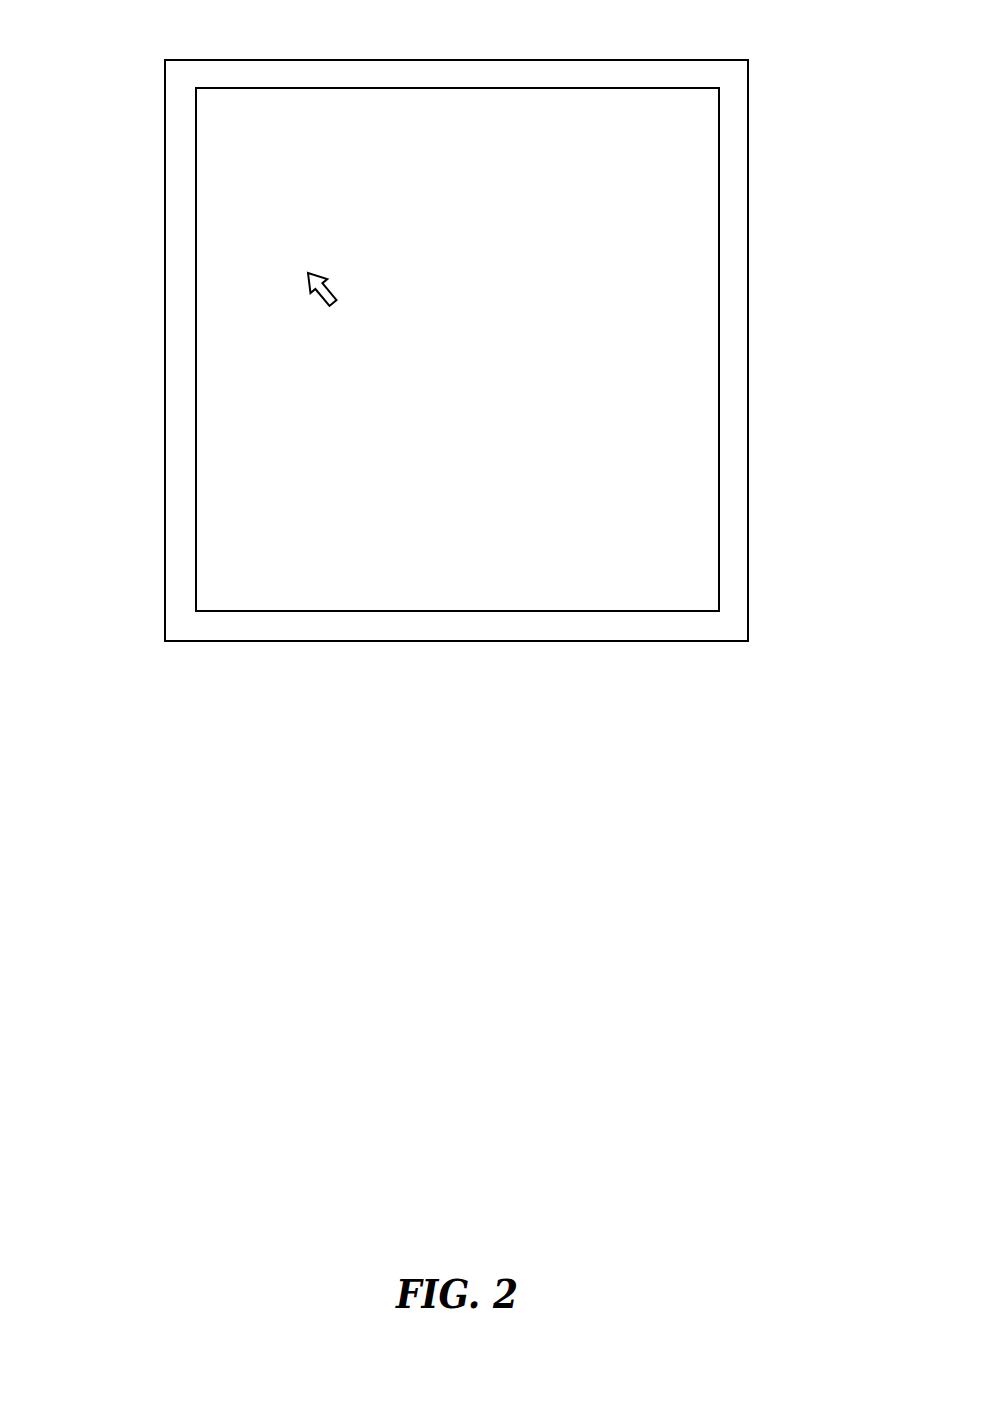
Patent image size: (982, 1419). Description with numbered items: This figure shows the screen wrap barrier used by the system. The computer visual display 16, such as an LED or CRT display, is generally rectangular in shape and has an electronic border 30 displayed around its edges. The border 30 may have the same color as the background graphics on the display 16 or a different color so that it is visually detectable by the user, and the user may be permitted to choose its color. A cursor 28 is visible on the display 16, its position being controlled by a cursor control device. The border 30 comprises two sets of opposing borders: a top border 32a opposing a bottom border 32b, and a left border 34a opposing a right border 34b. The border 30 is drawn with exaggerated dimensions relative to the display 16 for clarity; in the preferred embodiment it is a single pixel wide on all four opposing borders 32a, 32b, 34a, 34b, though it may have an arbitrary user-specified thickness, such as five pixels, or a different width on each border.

The computer visual display 16 is at (150, 752).
The cursor 28 is at (332, 290).
The electronic border 30 is at (700, 629).
The top border 32a is at (470, 68).
The bottom border 32b is at (457, 632).
The left border 34a is at (178, 340).
The right border 34b is at (737, 340).